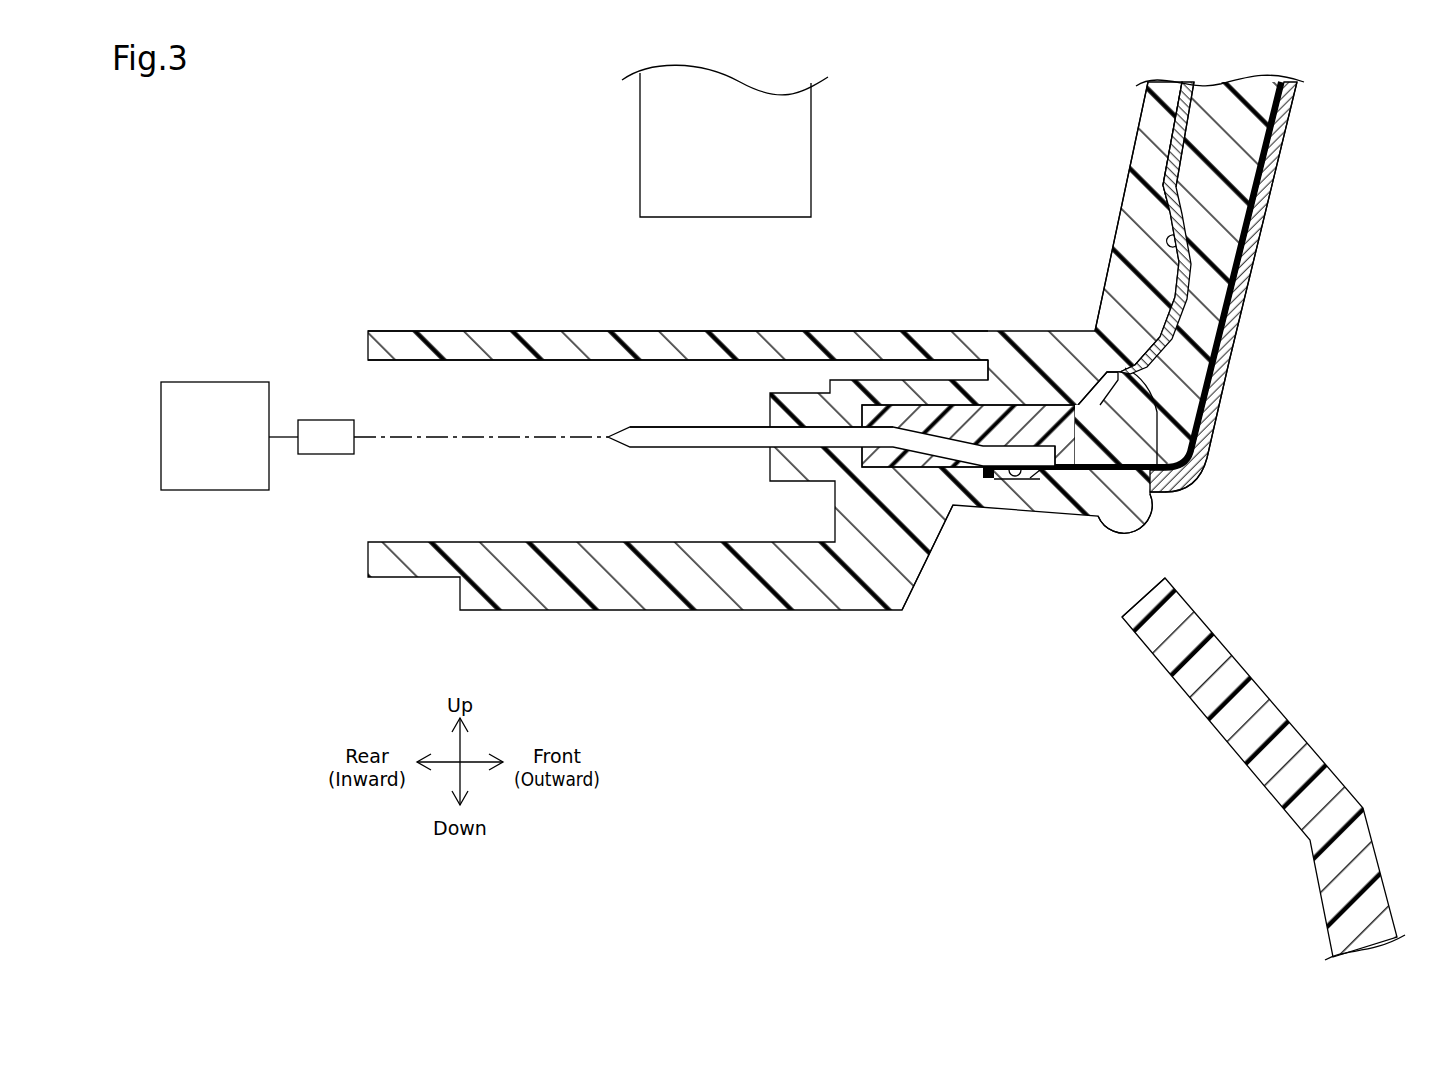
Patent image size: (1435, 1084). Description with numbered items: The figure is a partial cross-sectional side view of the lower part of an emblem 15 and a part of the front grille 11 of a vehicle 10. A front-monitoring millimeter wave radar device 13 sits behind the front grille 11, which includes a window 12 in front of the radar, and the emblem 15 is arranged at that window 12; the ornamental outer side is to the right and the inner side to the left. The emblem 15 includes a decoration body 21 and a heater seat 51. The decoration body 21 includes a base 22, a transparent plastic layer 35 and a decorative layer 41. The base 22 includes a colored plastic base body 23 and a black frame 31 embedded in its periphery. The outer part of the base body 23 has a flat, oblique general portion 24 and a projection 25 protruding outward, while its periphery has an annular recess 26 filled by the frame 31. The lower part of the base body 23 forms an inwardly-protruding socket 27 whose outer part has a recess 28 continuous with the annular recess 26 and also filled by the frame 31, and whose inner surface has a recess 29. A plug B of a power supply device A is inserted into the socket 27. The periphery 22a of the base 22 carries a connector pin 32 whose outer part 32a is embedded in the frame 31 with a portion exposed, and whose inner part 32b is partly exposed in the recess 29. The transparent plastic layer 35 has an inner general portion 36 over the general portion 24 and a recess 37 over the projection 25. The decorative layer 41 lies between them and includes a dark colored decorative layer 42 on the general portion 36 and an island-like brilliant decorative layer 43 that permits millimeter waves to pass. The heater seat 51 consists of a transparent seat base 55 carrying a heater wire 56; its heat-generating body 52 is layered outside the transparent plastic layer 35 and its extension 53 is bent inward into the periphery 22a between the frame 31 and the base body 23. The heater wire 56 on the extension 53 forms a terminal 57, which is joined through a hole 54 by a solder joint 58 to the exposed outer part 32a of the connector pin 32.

The vehicle 10 is at (1235, 267).
The front grille 11 is at (1256, 694).
The window 12 is at (1152, 585).
The millimeter wave radar device 13 is at (641, 186).
The emblem 15 is at (1296, 399).
The decoration body 21 is at (993, 195).
The base 22 is at (1043, 245).
The periphery 22a is at (1025, 541).
The base body 23 is at (1120, 270).
The general portion 24 is at (1150, 96).
The projection 25 is at (1152, 206).
The annular recess 26 is at (1158, 416).
The socket 27 is at (890, 637).
The recess 28 is at (915, 463).
The recess 29 is at (372, 358).
The frame 31 is at (1036, 402).
The connector pin 32 is at (683, 502).
The outer part 32a is at (1058, 460).
The inner part 32b is at (665, 447).
The transparent plastic layer 35 is at (1186, 228).
The general portion 36 is at (1200, 107).
The recess 37 is at (1180, 242).
The decorative layer 41 is at (1350, 135).
The colored decorative layer 42 is at (1187, 138).
The brilliant decorative layer 43 is at (1177, 184).
The heater seat 51 is at (1264, 465).
The heat-generating body 52 is at (1198, 456).
The extension 53 is at (1150, 486).
The hole 54 is at (1030, 478).
The seat base 55 is at (1261, 272).
The heater wire 56 is at (1250, 306).
The terminal 57 is at (1100, 488).
The joint 58 is at (1018, 470).
The device A is at (213, 493).
The plug B is at (328, 455).